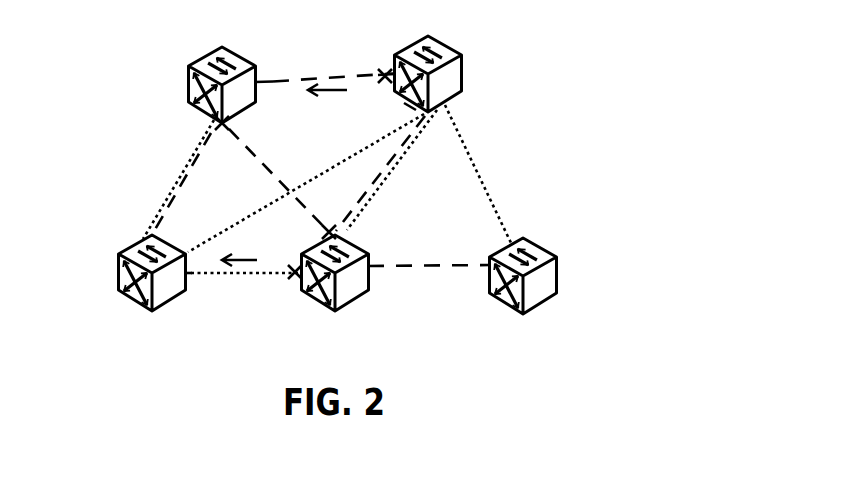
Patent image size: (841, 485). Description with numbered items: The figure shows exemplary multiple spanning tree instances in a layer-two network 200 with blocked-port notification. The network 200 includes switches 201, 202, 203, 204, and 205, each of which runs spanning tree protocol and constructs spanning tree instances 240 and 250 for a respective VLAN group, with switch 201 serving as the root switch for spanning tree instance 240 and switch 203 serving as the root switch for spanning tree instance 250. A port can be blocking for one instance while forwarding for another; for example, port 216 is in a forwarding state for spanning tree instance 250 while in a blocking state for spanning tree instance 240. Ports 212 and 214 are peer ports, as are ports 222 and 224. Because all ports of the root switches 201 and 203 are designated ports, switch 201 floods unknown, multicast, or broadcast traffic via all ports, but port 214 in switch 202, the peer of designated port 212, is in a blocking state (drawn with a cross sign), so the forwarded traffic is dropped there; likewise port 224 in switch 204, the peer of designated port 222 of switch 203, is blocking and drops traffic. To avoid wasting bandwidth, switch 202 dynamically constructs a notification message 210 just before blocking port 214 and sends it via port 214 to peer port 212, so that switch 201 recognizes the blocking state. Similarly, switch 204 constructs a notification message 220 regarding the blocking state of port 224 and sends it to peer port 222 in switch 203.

The layer-2 network 200 is at (613, 288).
The switch 201 is at (199, 111).
The switch 202 is at (463, 82).
The switch 203 is at (127, 295).
The switch 204 is at (357, 298).
The switch 205 is at (498, 302).
The notification message 210 is at (337, 93).
The port 212 is at (260, 80).
The port 214 is at (387, 74).
The port 216 is at (404, 106).
The notification message 220 is at (235, 257).
The port 222 is at (190, 275).
The port 224 is at (292, 278).
The spanning tree instance 240 is at (202, 152).
The spanning tree instance 250 is at (470, 162).